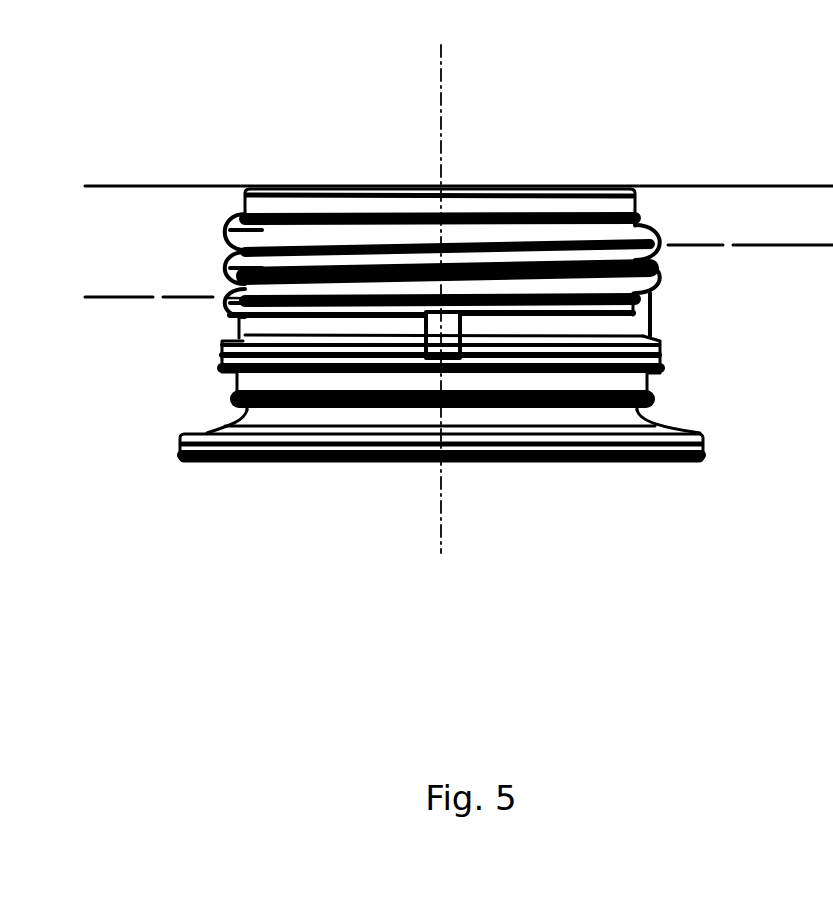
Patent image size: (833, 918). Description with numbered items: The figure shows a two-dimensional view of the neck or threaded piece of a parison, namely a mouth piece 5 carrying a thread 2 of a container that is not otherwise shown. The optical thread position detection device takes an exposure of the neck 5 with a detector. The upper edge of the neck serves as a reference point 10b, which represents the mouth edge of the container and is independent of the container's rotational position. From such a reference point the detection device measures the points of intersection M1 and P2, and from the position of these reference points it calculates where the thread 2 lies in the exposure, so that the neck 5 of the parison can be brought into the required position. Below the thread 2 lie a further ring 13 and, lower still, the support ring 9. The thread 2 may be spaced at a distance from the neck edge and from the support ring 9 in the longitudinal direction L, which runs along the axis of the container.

The mouth piece 5 is at (501, 280).
The reference point 10b is at (333, 185).
The thread 2 is at (661, 283).
The further ring 13 is at (662, 358).
The support ring 9 is at (705, 453).
The longitudinal direction L is at (440, 537).
The point of intersection P2 is at (108, 190).
The point of intersection M1 is at (808, 189).